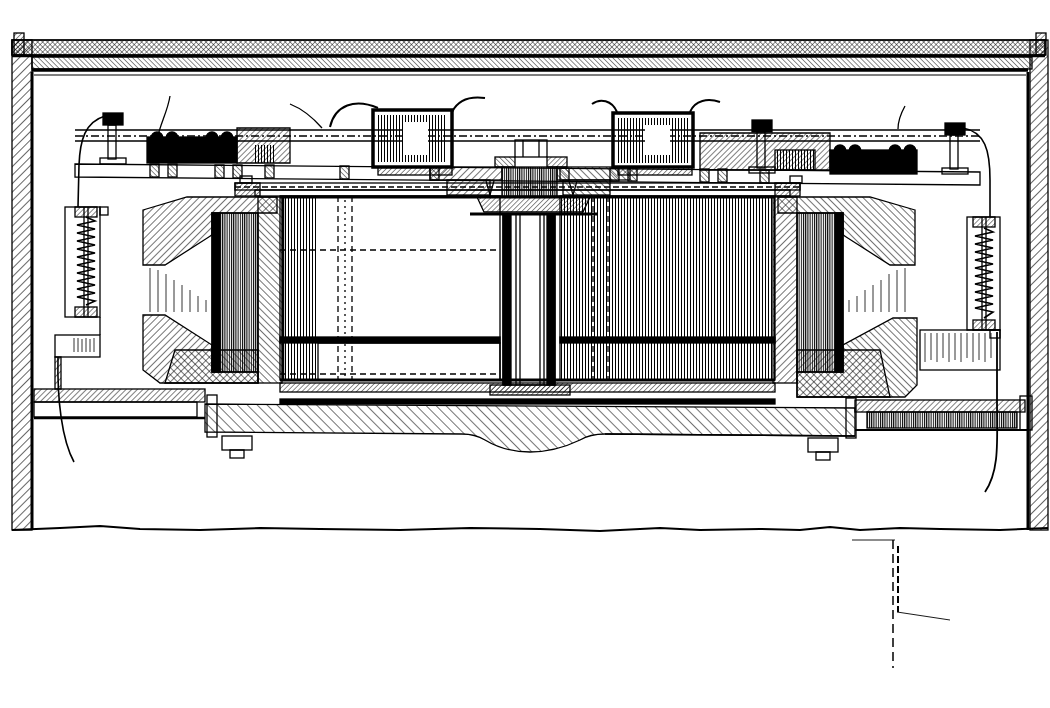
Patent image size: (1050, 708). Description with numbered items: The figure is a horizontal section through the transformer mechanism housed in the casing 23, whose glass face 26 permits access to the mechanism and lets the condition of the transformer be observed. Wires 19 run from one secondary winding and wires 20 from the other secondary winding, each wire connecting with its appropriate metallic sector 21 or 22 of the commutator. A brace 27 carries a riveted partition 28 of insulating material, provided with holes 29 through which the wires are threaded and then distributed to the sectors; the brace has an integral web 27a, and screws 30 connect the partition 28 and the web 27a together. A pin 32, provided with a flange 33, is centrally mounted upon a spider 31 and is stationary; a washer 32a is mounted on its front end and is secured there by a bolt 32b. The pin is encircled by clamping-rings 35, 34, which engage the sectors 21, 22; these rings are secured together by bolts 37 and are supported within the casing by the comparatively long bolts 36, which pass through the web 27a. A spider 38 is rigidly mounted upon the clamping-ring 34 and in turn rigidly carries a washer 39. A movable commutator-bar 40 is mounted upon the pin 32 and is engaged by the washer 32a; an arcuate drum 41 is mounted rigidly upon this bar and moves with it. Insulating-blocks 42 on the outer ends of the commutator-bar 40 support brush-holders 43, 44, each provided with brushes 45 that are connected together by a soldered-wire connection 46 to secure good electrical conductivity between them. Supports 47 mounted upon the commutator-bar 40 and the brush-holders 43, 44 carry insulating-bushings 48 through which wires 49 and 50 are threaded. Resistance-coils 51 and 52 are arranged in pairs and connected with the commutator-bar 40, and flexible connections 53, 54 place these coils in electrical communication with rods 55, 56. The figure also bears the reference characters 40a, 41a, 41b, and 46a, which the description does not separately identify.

The wire 19 is at (996, 483).
The wire 20 is at (72, 455).
The metallic sector 21 is at (155, 290).
The metallic sector 22 is at (928, 292).
The casing 23 is at (1028, 514).
The glass face 26 is at (547, 44).
The brace 27 is at (518, 443).
The web 27a is at (692, 440).
The partition 28 is at (100, 420).
The holes 29 is at (57, 376).
The screws 30 is at (212, 438).
The spider 31 is at (660, 452).
The pin 32 is at (530, 304).
The washer 32a is at (580, 167).
The bolt 32b is at (534, 140).
The flange 33 is at (262, 352).
The clamping-ring 34 is at (284, 282).
The clamping-ring 35 is at (409, 361).
The long bolts 36 is at (152, 240).
The bolts 37 is at (350, 286).
The spider 38 is at (396, 196).
The washer 39 is at (440, 200).
The commutator-bar 40 is at (366, 190).
The plate extension 40a is at (104, 208).
The arcuate drum 41 is at (346, 163).
The bracket 41a is at (262, 135).
The bracket 41b is at (242, 150).
The insulating-blocks 42 is at (192, 137).
The brush-holder 43 is at (998, 272).
The brush-holder 44 is at (66, 258).
The brushes 45 is at (68, 215).
The soldered-wire connection 46 is at (962, 124).
The terminal 46a is at (999, 338).
The supports 47 is at (113, 114).
The insulating-bushings 48 is at (301, 106).
The wire 49 is at (168, 107).
The wire 50 is at (905, 109).
The resistance-coil 51 is at (412, 142).
The resistance-coil 52 is at (653, 144).
The flexible connection 53 is at (456, 109).
The flexible connection 54 is at (612, 111).
The rod 55 is at (385, 106).
The rod 56 is at (680, 110).